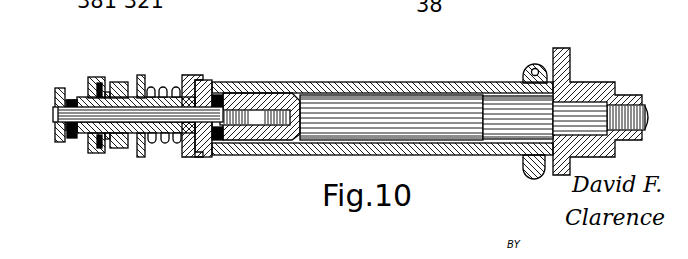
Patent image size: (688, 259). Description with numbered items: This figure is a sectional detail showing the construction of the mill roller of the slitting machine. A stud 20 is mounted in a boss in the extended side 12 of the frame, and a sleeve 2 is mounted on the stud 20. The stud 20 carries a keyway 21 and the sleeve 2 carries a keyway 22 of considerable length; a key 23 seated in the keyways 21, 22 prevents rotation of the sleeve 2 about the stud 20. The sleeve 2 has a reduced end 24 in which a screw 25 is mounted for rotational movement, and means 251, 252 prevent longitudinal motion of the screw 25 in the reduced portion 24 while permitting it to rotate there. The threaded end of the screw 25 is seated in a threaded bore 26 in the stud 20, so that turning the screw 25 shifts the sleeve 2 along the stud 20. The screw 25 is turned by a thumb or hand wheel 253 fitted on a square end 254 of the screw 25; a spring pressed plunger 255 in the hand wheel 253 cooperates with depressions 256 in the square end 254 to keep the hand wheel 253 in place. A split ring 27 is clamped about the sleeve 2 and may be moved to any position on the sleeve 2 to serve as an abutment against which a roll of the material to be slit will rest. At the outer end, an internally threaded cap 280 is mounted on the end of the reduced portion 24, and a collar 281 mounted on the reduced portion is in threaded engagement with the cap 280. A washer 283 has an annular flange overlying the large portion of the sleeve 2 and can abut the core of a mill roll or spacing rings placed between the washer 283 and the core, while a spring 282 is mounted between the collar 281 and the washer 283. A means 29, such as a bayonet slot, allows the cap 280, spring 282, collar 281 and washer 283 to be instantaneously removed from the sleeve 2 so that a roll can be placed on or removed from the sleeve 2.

The sleeve 2 is at (383, 88).
The extended side of the frame 12 is at (571, 60).
The stud 20 is at (505, 122).
The keyway in stud 21 is at (537, 54).
The keyway in sleeve 22 is at (478, 95).
The key 23 is at (498, 83).
The reduced end of sleeve 24 is at (166, 189).
The screw 25 is at (203, 137).
The threaded bore 26 is at (260, 126).
The split ring 27 is at (538, 69).
The bayonet slot 29 is at (123, 77).
The screw retaining means 251 is at (80, 99).
The screw retaining means 252 is at (264, 101).
The hand wheel 253 is at (60, 87).
The square end of screw 254 is at (56, 122).
The spring pressed plunger 255 is at (70, 140).
The depressions 256 is at (100, 64).
The internally threaded cap 280 is at (93, 153).
The collar 281 is at (140, 157).
The spring 282 is at (172, 86).
The washer 283 is at (190, 75).